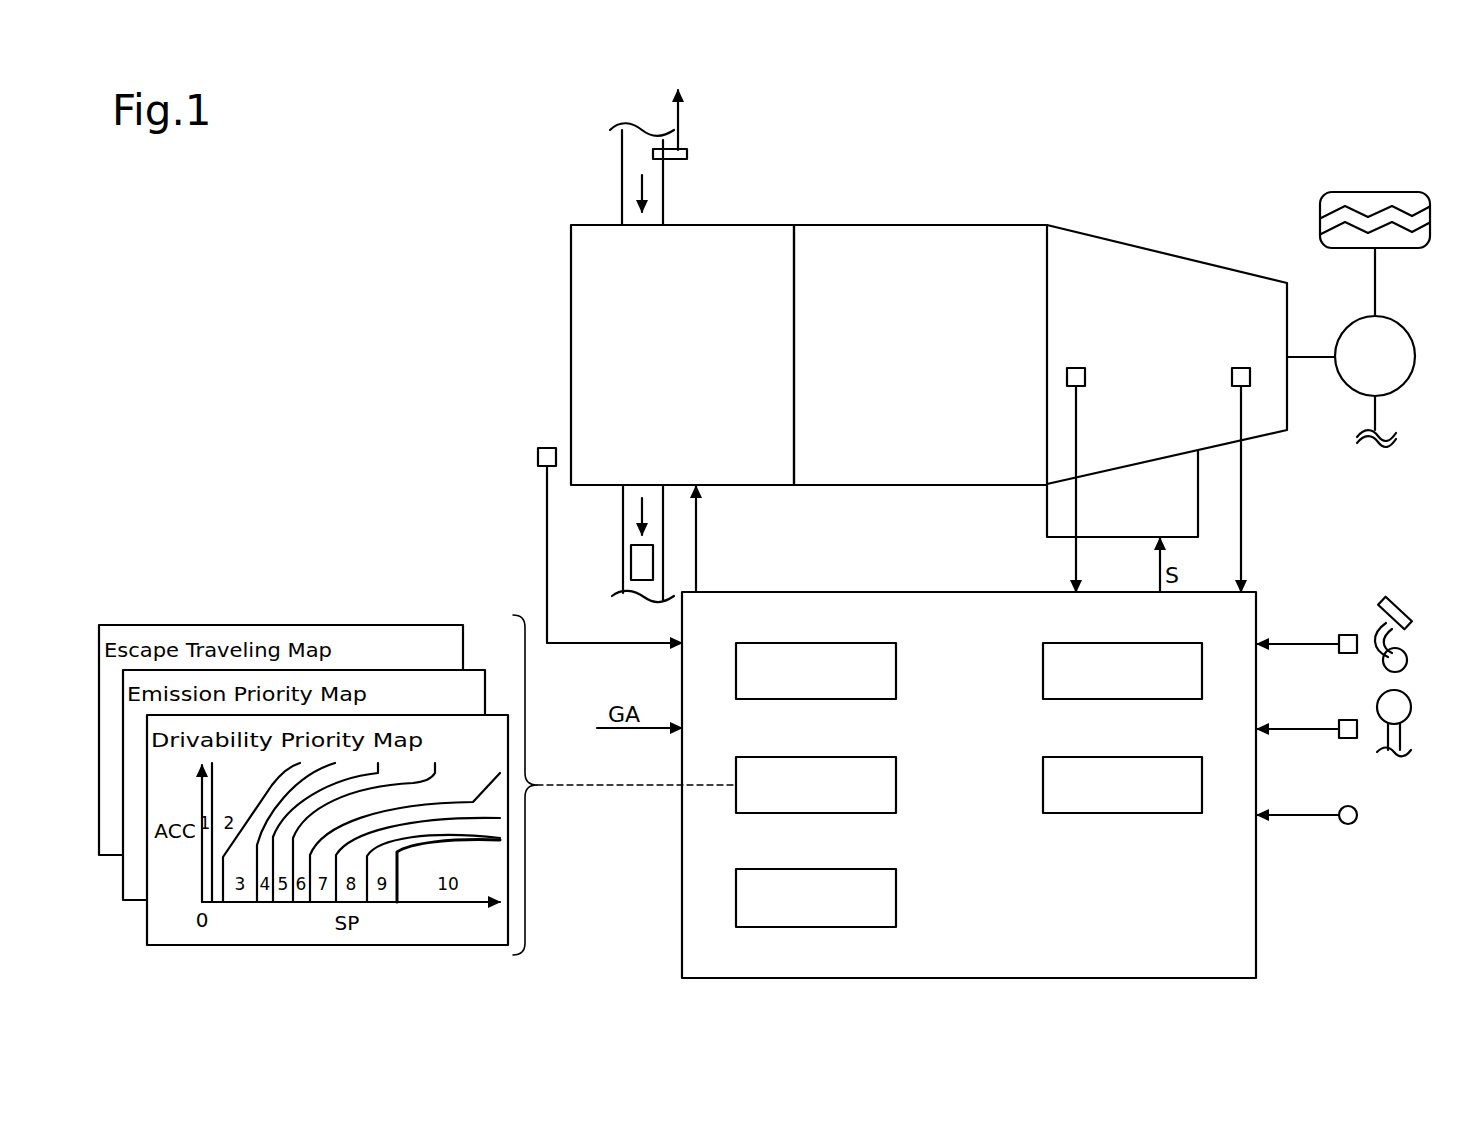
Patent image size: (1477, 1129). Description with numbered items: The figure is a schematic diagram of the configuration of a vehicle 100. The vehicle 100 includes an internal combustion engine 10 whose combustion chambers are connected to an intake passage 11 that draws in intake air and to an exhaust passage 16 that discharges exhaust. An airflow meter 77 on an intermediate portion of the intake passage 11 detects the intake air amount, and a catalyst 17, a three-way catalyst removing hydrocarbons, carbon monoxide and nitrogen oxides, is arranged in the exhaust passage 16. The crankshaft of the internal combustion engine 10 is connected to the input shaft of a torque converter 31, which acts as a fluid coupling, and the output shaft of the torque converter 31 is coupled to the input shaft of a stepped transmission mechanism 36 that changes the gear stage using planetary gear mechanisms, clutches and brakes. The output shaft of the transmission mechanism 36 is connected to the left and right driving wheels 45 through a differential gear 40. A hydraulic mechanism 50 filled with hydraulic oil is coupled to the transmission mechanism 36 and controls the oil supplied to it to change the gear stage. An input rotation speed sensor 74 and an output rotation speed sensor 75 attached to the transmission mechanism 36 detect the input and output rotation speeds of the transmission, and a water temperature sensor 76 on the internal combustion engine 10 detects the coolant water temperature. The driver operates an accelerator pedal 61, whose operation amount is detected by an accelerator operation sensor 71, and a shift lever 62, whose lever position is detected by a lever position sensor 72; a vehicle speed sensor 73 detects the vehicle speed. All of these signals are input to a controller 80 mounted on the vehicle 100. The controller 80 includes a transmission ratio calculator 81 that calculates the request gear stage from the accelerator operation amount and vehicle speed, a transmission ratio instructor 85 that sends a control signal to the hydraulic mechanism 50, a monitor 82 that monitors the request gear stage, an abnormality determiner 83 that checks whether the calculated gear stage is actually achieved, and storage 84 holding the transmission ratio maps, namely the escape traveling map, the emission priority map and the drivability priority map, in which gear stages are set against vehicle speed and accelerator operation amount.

The vehicle 100 is at (1250, 170).
The internal combustion engine 10 is at (763, 225).
The intake passage 11 is at (622, 197).
The exhaust passage 16 is at (623, 516).
The catalyst 17 is at (631, 564).
The torque converter 31 is at (920, 225).
The transmission mechanism 36 is at (1173, 255).
The differential gear 40 is at (1416, 357).
The driving wheels 45 is at (1348, 190).
The hydraulic mechanism 50 is at (1047, 512).
The accelerator pedal 61 is at (1408, 604).
The shift lever 62 is at (1412, 708).
The accelerator operation sensor 71 is at (1347, 635).
The lever position sensor 72 is at (1347, 720).
The vehicle speed sensor 73 is at (1348, 806).
The input rotation speed sensor 74 is at (1076, 368).
The output rotation speed sensor 75 is at (1241, 368).
The water temperature sensor 76 is at (547, 448).
The airflow meter 77 is at (688, 154).
The controller 80 is at (1258, 914).
The transmission ratio calculator 81 is at (829, 642).
The monitor 82 is at (1136, 642).
The abnormality determiner 83 is at (1136, 756).
The storage 84 is at (829, 756).
The transmission ratio instructor 85 is at (829, 868).